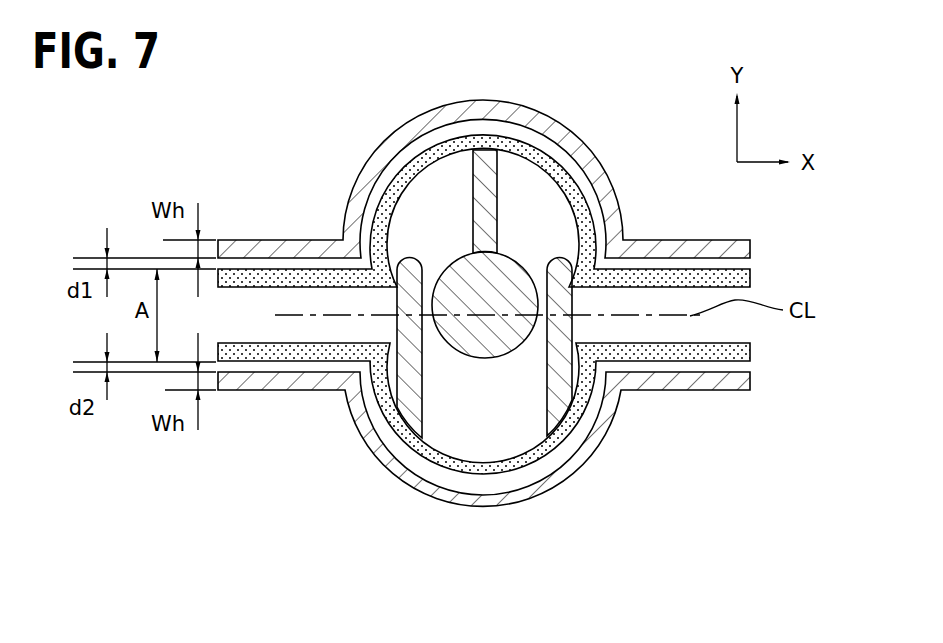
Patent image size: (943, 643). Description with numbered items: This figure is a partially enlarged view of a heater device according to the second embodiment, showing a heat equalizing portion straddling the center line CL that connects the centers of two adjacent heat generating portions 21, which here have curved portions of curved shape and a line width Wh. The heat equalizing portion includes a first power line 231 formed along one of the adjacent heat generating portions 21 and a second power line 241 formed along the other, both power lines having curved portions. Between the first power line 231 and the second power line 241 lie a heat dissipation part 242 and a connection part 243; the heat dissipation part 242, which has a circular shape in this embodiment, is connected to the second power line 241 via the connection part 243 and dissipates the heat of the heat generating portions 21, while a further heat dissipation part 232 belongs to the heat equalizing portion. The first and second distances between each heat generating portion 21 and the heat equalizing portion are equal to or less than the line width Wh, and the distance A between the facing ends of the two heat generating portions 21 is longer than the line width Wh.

The heat generating portion 21 is at (521, 110).
The first power line 231 is at (553, 467).
The heat dissipation part 232 is at (572, 327).
The second power line 241 is at (580, 190).
The heat dissipation part 242 is at (516, 257).
The connection part 243 is at (497, 203).